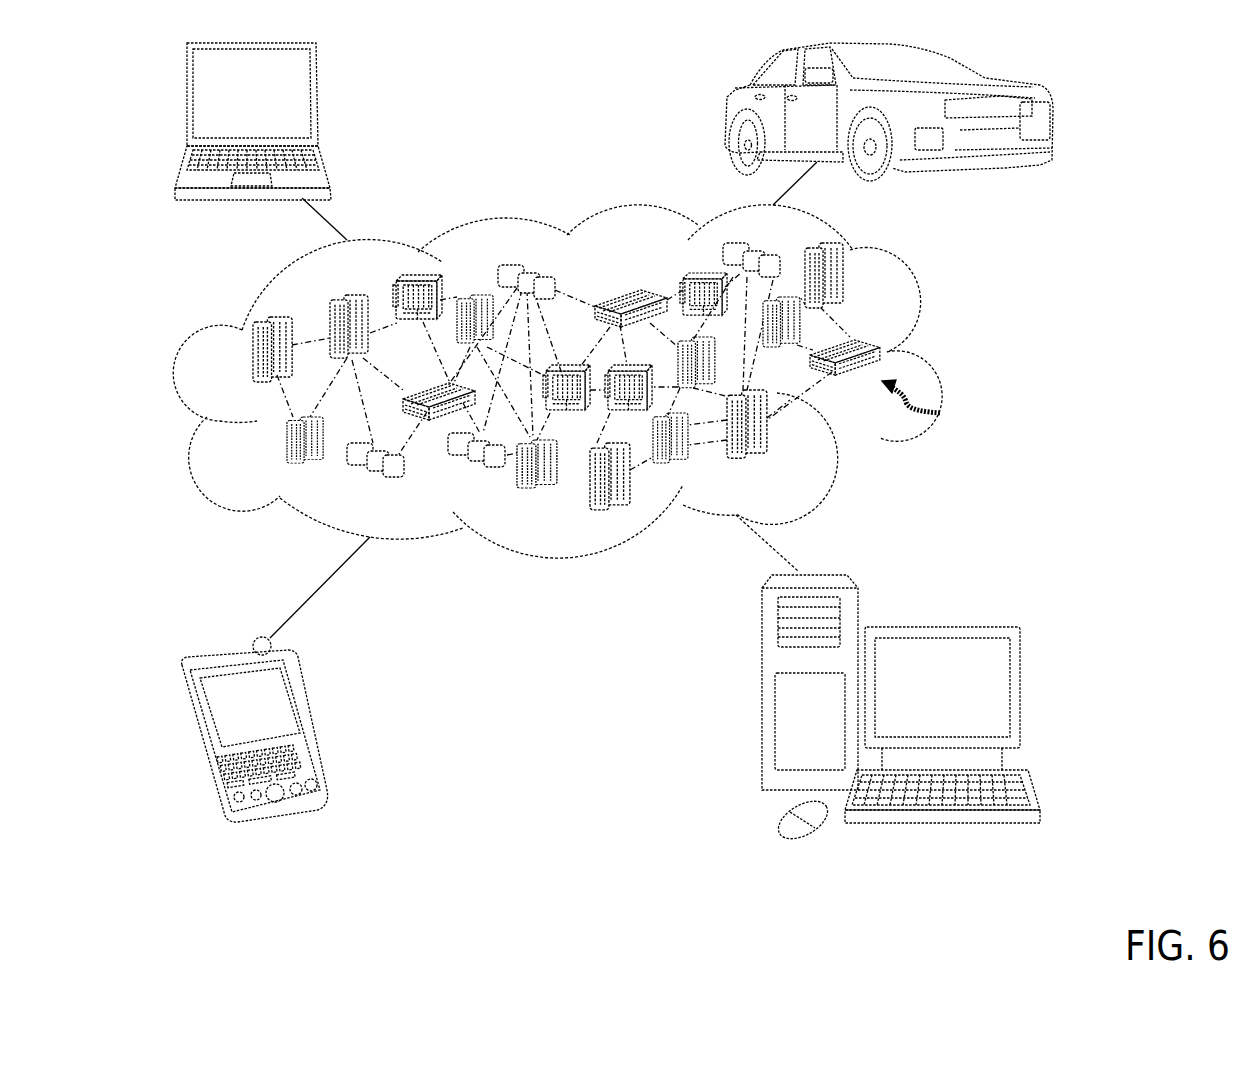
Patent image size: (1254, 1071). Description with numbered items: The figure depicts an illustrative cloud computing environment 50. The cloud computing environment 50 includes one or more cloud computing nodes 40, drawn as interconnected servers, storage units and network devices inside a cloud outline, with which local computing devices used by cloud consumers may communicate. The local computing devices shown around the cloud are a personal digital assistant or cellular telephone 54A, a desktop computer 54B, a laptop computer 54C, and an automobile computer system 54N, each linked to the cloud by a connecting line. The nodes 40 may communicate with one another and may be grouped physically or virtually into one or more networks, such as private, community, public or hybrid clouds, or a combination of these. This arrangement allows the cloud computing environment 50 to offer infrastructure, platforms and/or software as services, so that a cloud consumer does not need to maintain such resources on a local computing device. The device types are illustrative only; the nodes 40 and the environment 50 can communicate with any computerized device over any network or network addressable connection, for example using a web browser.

The cloud computing node 40 is at (930, 403).
The cloud computing environment 50 is at (938, 353).
The personal digital assistant (PDA) or cellular telephone 54A is at (312, 722).
The desktop computer 54B is at (940, 627).
The laptop computer 54C is at (320, 100).
The automobile computer system 54N is at (728, 112).